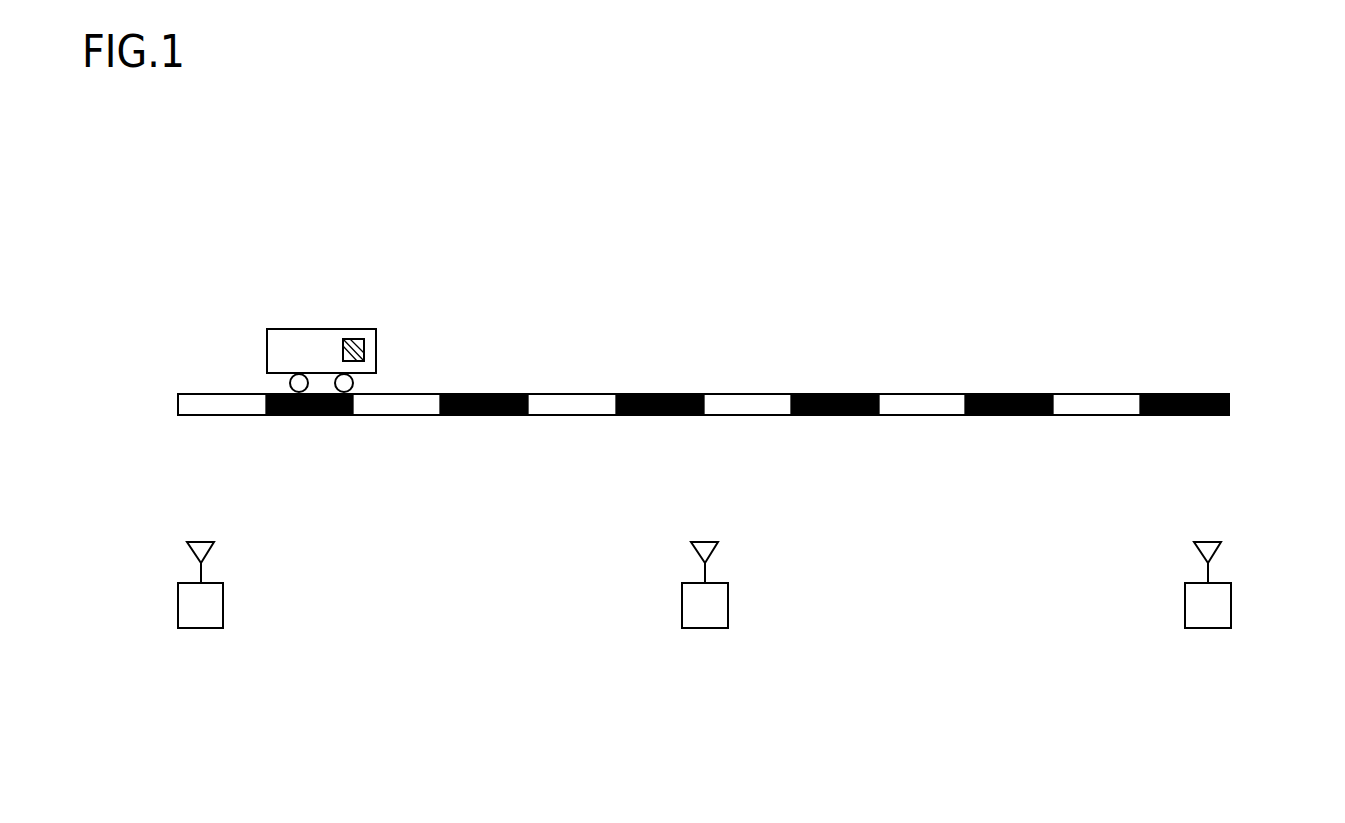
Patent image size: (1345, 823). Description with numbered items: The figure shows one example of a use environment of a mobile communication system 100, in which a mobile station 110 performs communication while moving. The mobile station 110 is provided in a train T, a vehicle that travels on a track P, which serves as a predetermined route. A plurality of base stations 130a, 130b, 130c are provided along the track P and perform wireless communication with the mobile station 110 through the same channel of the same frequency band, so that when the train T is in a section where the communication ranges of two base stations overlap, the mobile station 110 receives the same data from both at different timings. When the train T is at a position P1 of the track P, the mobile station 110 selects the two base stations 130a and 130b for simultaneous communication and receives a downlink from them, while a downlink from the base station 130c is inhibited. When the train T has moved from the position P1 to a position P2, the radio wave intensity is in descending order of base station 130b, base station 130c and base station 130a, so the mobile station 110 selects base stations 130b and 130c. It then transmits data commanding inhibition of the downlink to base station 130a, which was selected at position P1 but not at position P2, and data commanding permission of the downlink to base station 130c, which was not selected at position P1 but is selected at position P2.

The mobile communication system 100 is at (747, 195).
The mobile station 110 is at (353, 339).
The train T is at (325, 326).
The track P is at (1098, 394).
The position P1 is at (566, 417).
The position P2 is at (835, 417).
The base station 130a is at (200, 629).
The base station 130b is at (704, 629).
The base station 130c is at (1207, 629).